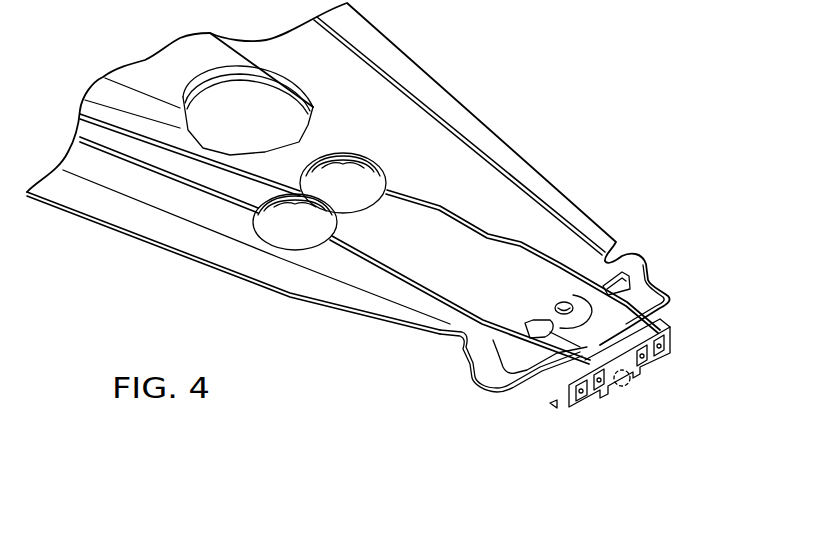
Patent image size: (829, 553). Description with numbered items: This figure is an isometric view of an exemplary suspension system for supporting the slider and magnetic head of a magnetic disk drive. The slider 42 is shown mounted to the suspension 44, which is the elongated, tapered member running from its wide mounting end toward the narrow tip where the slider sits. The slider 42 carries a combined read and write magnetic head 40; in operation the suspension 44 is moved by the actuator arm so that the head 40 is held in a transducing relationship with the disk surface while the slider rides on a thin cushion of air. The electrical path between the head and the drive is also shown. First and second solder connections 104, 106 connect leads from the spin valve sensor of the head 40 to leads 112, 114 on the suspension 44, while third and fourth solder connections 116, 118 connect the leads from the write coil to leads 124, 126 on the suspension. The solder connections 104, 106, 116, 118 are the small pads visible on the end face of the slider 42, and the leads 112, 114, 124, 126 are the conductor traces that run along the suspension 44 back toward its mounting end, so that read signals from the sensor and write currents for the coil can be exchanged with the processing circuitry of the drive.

The magnetic head 40 is at (630, 385).
The slider 42 is at (516, 403).
The suspension 44 is at (485, 114).
The first solder connection 104 is at (570, 397).
The second solder connection 106 is at (668, 344).
The lead 112 is at (360, 258).
The lead 114 is at (538, 247).
The third solder connection 116 is at (597, 390).
The fourth solder connection 118 is at (644, 366).
The lead 124 is at (405, 274).
The lead 126 is at (461, 218).